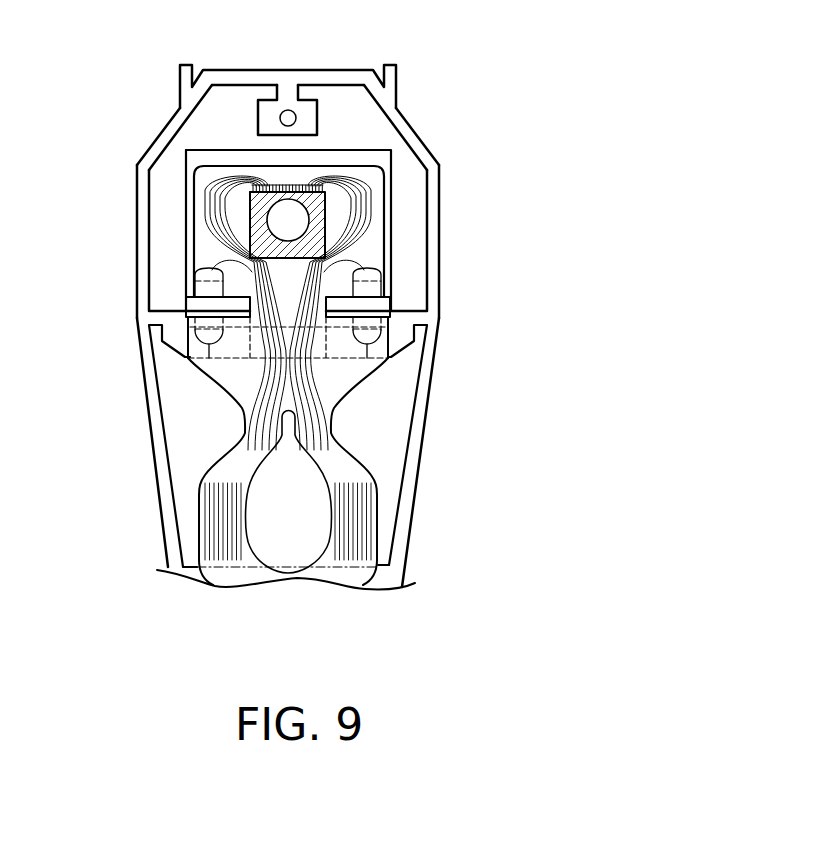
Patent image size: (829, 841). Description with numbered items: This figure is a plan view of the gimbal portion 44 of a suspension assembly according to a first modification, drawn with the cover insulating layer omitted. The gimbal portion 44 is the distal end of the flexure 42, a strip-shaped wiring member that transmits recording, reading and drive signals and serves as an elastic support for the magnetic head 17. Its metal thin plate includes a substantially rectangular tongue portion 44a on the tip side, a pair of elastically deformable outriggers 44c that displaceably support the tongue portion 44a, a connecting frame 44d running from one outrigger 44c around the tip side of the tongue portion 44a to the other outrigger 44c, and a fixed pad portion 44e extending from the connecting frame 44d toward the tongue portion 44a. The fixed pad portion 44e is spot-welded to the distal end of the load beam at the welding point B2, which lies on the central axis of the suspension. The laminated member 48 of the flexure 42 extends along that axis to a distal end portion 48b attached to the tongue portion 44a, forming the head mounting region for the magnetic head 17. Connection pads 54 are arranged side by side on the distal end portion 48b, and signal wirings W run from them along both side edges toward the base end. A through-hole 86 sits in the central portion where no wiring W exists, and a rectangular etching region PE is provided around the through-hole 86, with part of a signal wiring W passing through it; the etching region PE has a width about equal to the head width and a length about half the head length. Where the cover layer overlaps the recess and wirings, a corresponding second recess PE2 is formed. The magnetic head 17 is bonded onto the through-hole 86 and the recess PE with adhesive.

The gimbal portion 44 is at (82, 248).
The tongue portion 44a is at (390, 197).
The outriggers 44c is at (137, 392).
The connecting frame 44d is at (163, 148).
The fixed pad portion 44e is at (268, 113).
The welding point B2 is at (296, 116).
The connection pads 54 is at (273, 185).
The through-hole 86 is at (308, 192).
The signal wirings W is at (223, 202).
The etching region PE is at (325, 228).
The second recess PE2 is at (260, 231).
The magnetic head 17 is at (366, 268).
The distal end portion 48b is at (203, 223).
The laminated member 48 is at (222, 528).
The flexure 42 is at (230, 590).